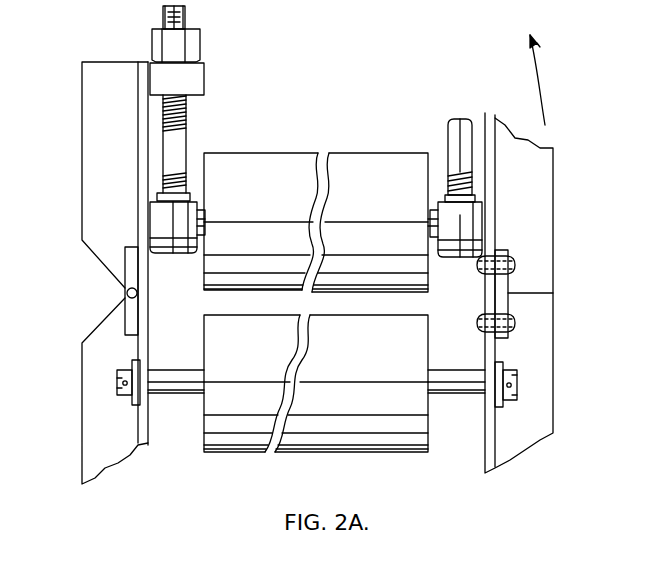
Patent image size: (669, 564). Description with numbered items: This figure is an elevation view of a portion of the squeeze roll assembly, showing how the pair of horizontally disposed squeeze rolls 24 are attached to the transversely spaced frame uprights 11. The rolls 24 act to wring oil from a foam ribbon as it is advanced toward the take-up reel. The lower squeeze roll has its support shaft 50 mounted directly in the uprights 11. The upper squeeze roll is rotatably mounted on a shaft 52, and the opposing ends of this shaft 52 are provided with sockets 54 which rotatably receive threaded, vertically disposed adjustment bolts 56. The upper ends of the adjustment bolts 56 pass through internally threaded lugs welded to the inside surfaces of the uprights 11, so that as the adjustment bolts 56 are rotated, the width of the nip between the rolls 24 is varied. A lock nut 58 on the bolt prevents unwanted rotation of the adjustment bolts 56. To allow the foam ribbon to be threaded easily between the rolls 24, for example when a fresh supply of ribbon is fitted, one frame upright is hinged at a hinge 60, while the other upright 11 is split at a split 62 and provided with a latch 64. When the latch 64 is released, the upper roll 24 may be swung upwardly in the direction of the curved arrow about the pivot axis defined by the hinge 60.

The uprights 11 is at (82, 210).
The squeeze rolls 24 is at (308, 152).
The support shaft 50 is at (198, 368).
The shaft 52 is at (196, 200).
The sockets 54 is at (160, 222).
The adjustment bolts 56 is at (182, 138).
The lock nut 58 is at (200, 33).
The hinge 60 is at (125, 290).
The split 62 is at (518, 293).
The latch 64 is at (503, 287).